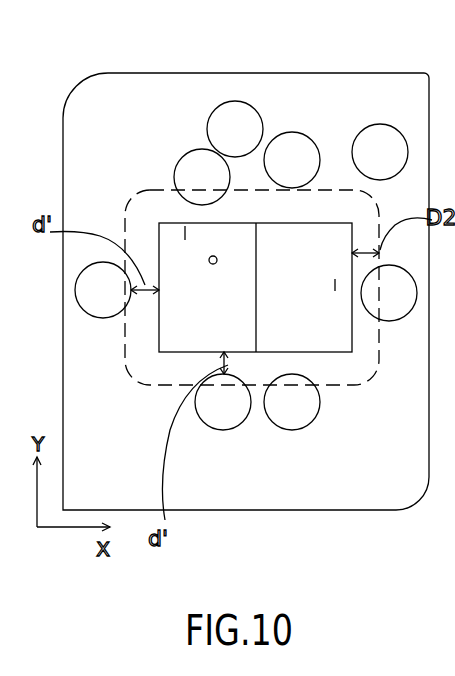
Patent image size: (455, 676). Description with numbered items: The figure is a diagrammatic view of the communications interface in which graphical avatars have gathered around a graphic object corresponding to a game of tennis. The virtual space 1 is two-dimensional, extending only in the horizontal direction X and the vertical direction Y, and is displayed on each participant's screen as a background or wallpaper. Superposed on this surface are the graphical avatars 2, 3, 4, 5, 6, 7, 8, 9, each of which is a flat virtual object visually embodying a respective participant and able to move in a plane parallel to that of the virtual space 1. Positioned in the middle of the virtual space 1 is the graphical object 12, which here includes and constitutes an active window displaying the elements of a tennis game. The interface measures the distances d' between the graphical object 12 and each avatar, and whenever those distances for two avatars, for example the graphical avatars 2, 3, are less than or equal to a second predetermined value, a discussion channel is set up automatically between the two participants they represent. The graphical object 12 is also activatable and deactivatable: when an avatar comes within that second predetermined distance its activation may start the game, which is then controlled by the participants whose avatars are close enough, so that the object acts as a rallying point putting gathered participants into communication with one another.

The virtual space 1 is at (215, 478).
The graphical avatar 2 is at (95, 290).
The graphical avatar 3 is at (232, 412).
The graphical avatar 4 is at (300, 412).
The graphical avatar 5 is at (395, 298).
The graphical avatar 6 is at (378, 136).
The graphical avatar 7 is at (290, 152).
The graphical avatar 8 is at (230, 118).
The graphical avatar 9 is at (189, 172).
The graphical object 12 is at (178, 325).